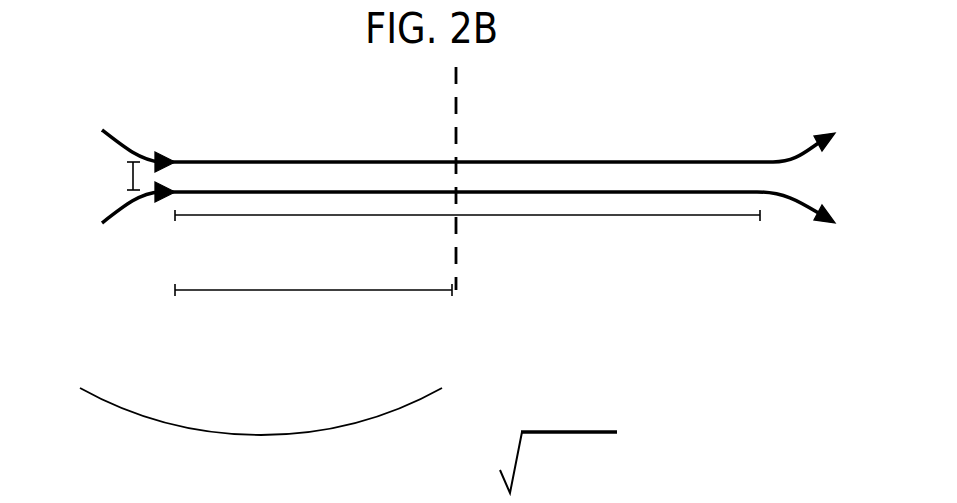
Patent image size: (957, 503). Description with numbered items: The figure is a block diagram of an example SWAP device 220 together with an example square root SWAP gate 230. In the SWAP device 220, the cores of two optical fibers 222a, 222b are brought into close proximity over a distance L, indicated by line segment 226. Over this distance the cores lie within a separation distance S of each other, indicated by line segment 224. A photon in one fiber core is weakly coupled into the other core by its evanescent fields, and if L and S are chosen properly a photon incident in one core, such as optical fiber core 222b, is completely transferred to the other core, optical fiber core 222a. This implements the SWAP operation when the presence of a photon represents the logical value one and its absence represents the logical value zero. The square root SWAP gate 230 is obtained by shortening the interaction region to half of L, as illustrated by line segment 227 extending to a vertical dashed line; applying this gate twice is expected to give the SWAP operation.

The SWAP device 220 is at (587, 103).
The optical fiber core 222a is at (402, 155).
The optical fiber core 222b is at (420, 193).
The line segment indicating separation distance S 224 is at (128, 177).
The line segment indicating distance L 226 is at (517, 217).
The line segment indicating length L/2 227 is at (357, 290).
The square root SWAP gate 230 is at (365, 420).